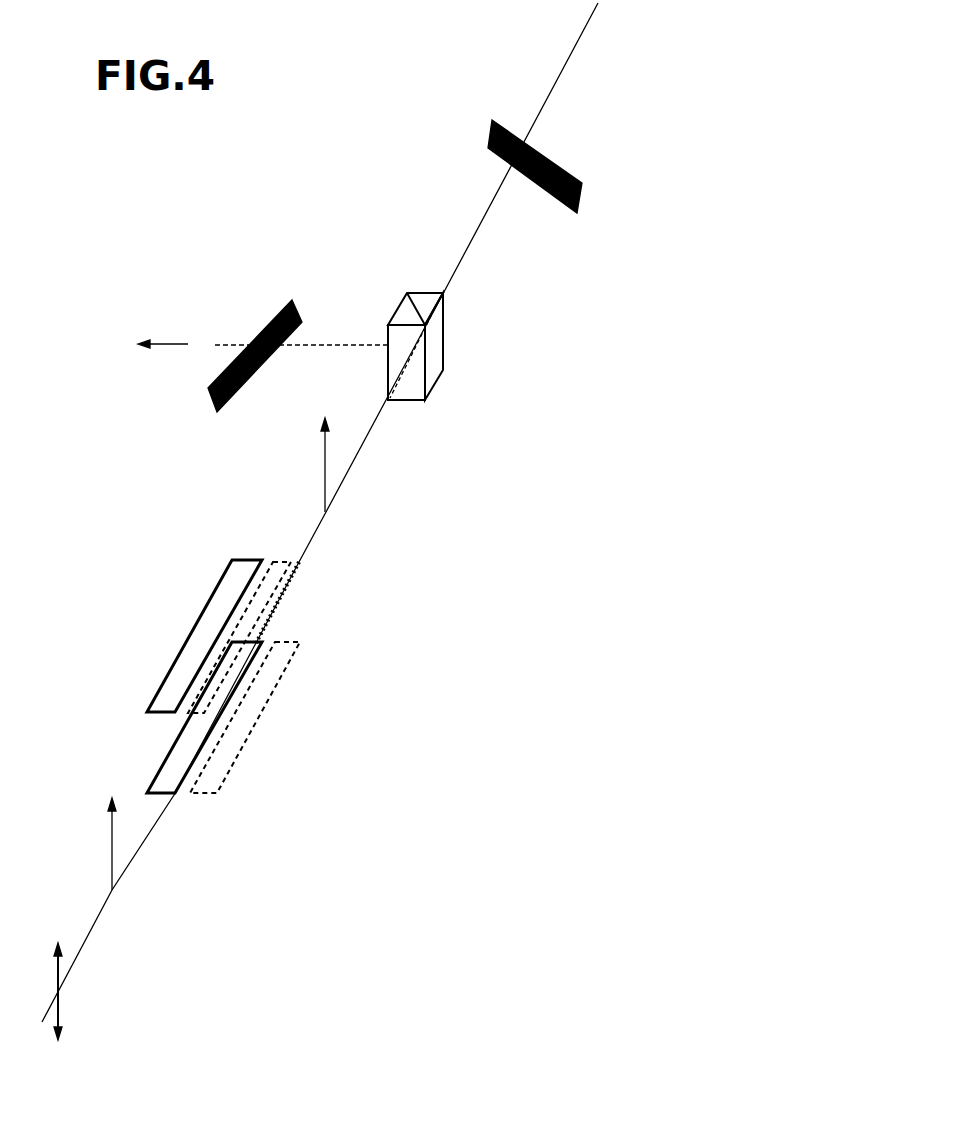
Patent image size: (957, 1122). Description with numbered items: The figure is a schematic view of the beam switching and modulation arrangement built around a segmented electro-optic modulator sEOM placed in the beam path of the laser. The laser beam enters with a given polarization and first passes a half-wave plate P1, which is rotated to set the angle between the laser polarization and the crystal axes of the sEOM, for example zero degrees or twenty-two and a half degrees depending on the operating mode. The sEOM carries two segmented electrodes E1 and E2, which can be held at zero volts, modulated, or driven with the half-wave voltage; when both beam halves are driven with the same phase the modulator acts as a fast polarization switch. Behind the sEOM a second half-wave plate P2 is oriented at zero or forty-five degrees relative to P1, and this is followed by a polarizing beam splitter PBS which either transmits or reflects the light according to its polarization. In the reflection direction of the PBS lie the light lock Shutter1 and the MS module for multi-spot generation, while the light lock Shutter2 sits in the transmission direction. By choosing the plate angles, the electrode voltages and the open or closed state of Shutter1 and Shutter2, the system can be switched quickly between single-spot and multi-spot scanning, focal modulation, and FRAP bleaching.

The second shutter Shutter2 is at (572, 173).
The first shutter Shutter1 is at (268, 323).
The polarizing beam splitter PBS is at (437, 373).
The element MS module is at (225, 361).
The second λ/2 plate P2 is at (308, 465).
The first λ/2 plate P1 is at (97, 844).
The second electrode E2 is at (253, 641).
The first electrode E1 is at (295, 561).
The segmented electro-optic modulator sEOM is at (299, 652).